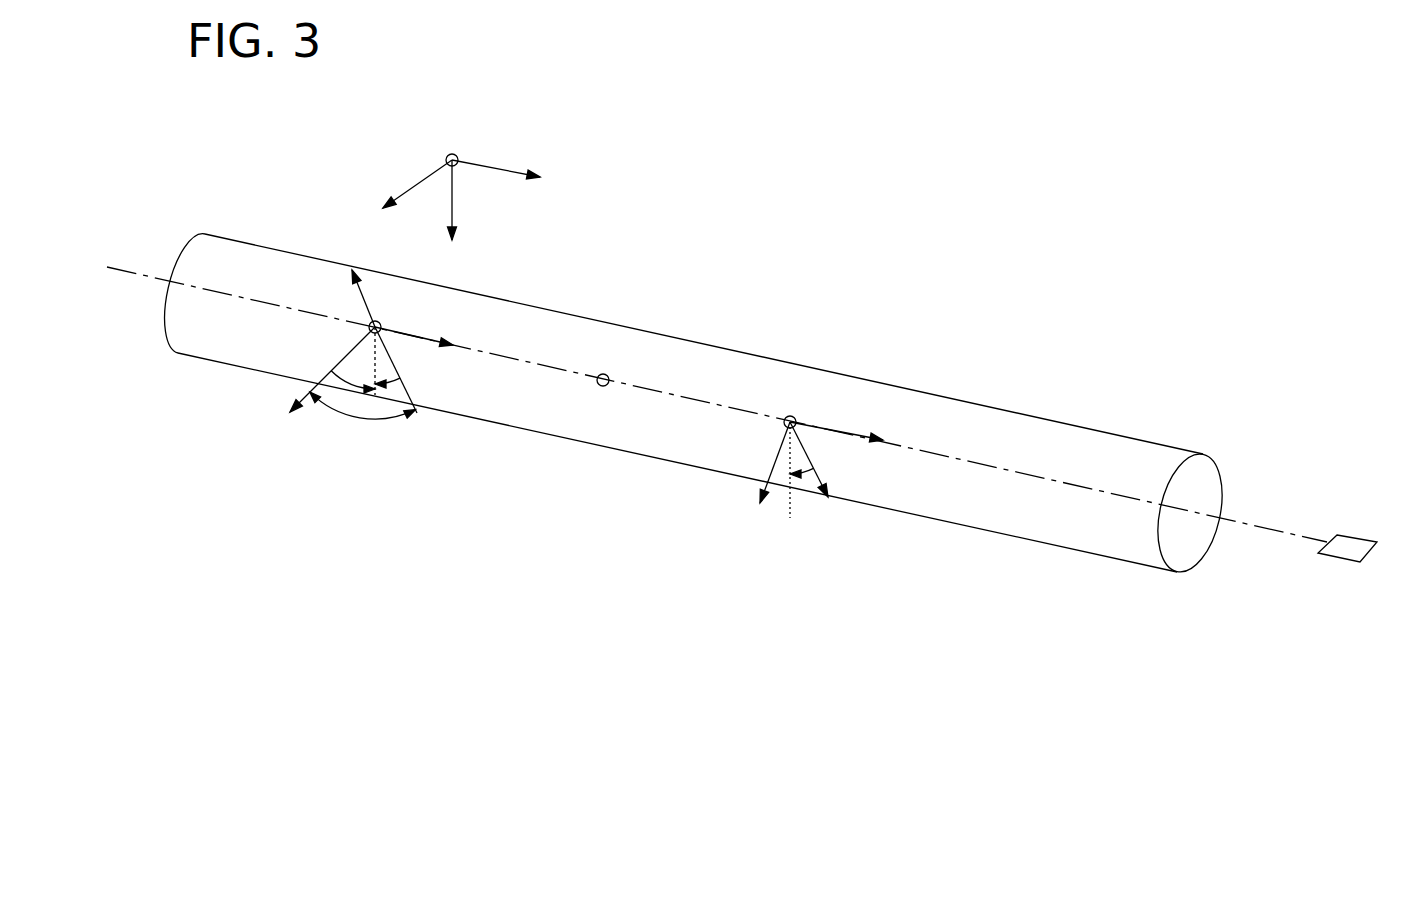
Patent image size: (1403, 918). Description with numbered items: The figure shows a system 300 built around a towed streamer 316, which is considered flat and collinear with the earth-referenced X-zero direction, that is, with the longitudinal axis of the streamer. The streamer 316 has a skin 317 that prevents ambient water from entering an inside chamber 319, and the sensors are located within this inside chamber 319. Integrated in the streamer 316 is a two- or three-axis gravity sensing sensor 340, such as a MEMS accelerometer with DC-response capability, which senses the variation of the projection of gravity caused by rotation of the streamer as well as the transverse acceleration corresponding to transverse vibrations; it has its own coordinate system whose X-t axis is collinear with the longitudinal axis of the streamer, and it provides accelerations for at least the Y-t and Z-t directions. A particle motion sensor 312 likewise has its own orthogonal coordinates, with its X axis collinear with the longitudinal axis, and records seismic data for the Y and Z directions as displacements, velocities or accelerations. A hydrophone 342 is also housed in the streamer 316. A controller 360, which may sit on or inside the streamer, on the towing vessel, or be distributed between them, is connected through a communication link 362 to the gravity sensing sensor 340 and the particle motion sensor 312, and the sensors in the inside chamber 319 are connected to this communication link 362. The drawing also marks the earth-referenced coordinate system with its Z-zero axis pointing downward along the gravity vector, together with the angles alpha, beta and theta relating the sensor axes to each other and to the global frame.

The system 300 is at (690, 182).
The particle motion sensor 312 is at (795, 413).
The streamer 316 is at (699, 408).
The skin 317 is at (932, 518).
The inside chamber 319 is at (707, 380).
The gravity sensing sensor 340 is at (379, 324).
The hydrophone 342 is at (600, 386).
The controller 360 is at (1353, 535).
The communication link 362 is at (1240, 527).